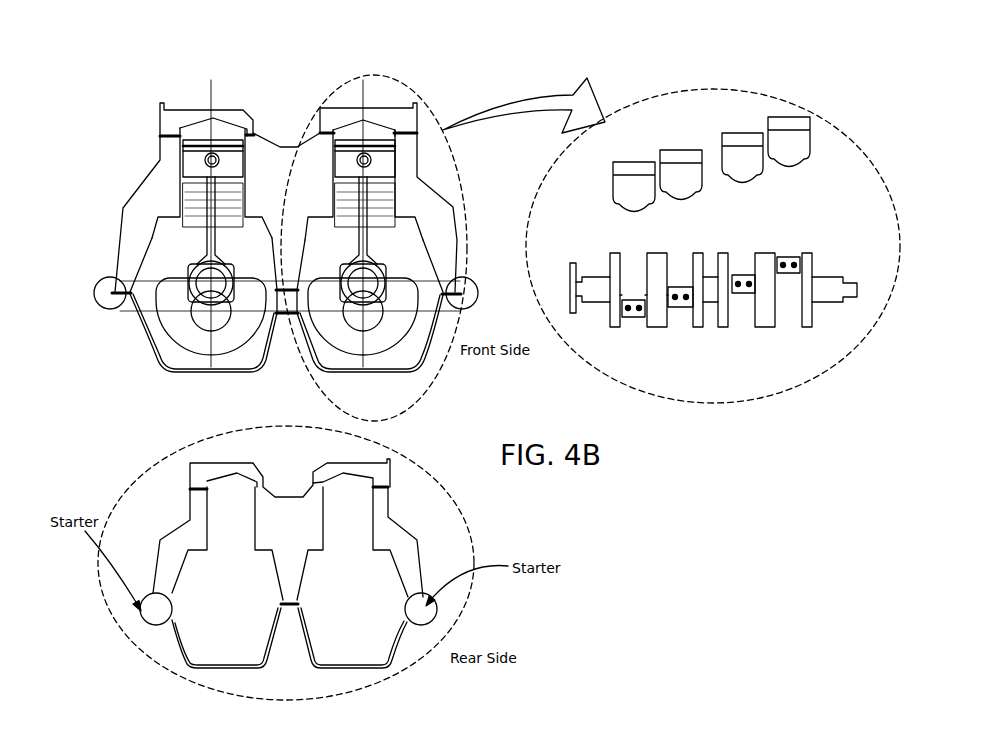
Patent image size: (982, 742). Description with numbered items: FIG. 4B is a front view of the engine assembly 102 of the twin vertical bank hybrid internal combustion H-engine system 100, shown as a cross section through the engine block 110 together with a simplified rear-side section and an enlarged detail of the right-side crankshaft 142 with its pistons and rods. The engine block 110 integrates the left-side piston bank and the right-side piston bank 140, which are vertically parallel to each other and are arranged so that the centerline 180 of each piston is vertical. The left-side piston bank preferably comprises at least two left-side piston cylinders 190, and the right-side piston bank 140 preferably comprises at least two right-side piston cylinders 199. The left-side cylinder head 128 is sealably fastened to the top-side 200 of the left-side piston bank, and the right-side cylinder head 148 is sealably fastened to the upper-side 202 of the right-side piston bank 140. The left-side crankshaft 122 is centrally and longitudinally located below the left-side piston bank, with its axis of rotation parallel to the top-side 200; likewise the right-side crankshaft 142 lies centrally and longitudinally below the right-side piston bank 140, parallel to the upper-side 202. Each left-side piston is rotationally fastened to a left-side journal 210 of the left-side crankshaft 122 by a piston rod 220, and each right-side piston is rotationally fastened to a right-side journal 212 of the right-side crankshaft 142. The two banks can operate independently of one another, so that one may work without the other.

The twin vertical bank hybrid internal combustion H-engine system 100 is at (368, 43).
The engine assembly 102 is at (284, 215).
The engine block 110 is at (446, 183).
The left-side crankshaft 122 is at (154, 341).
The left-side cylinder head 128 is at (148, 124).
The right-side piston bank 140 is at (688, 68).
The right-side crankshaft 142 is at (417, 344).
The right-side cylinder head 148 is at (430, 120).
The centerline 180 is at (199, 88).
The left-side piston cylinder 190 is at (224, 128).
The right-side piston cylinder 199 is at (356, 124).
The top-side of left-side piston bank 200 is at (171, 147).
The upper-side of right-side piston bank 202 is at (325, 146).
The left-side journal 210 is at (218, 298).
The right-side journal 212 is at (354, 298).
The piston rod 220 is at (385, 229).